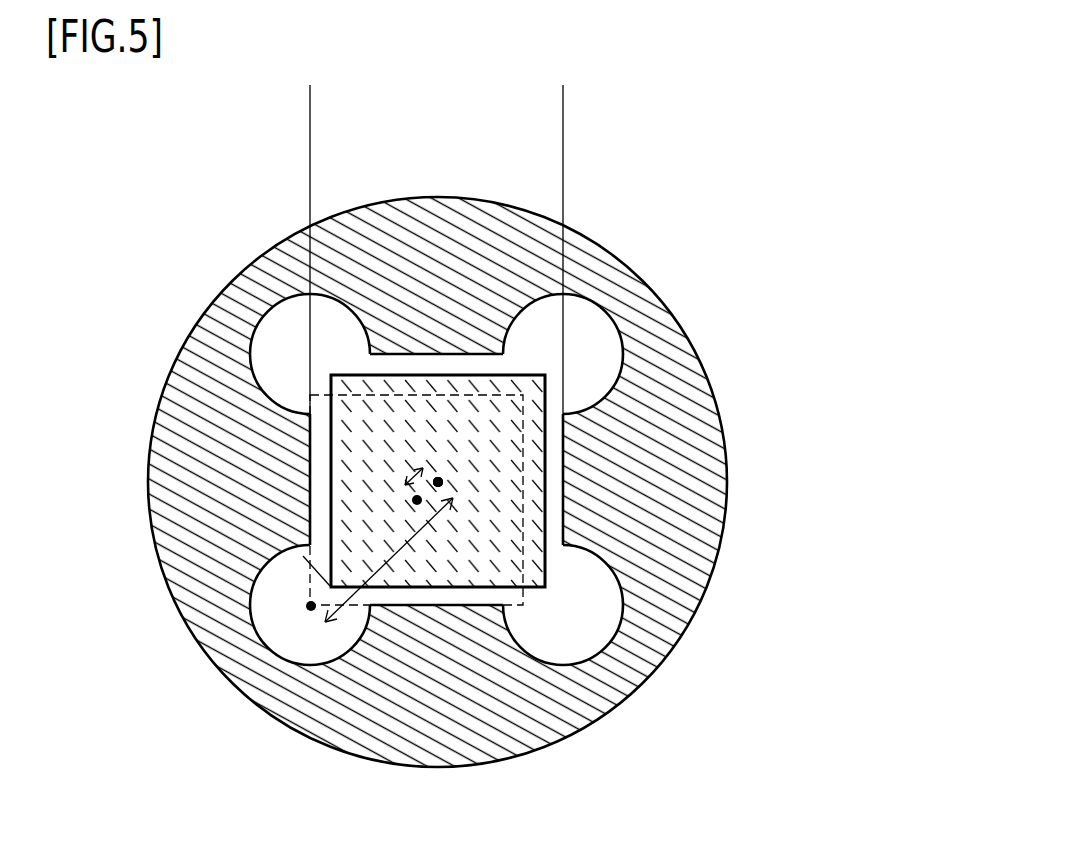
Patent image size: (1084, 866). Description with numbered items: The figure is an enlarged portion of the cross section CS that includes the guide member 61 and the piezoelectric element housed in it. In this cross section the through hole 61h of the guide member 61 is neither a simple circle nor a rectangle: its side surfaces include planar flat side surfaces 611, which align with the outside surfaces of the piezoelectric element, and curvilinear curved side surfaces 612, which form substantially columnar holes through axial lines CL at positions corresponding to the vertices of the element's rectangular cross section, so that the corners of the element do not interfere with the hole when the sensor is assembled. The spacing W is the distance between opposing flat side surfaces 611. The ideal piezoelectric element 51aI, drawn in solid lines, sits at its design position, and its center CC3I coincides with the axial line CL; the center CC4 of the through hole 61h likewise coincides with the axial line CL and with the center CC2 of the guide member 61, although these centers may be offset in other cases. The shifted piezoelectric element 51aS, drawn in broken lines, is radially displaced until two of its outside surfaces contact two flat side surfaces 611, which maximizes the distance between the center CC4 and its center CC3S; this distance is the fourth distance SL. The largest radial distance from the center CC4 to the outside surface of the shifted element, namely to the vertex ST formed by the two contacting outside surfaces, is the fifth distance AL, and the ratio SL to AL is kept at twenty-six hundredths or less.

The guide member 61 is at (610, 260).
The through hole 61h is at (610, 393).
The flat side surfaces 611 is at (428, 354).
The curved side surfaces 612 is at (292, 300).
The ideal piezoelectric element 51aI is at (547, 565).
The shifted piezoelectric element 51aS is at (307, 583).
The spacing W is at (563, 122).
The vertex ST is at (311, 607).
The fifth distance AL is at (355, 597).
The fourth distance SL is at (403, 485).
The center of the shifted piezoelectric element CC3S is at (417, 500).
The center of the guide member CC2 is at (438, 482).
The center of the ideal piezoelectric element CC3I is at (438, 482).
The center of the through hole CC4 is at (438, 482).
The axial line CL is at (438, 482).
The cross section CS is at (730, 210).